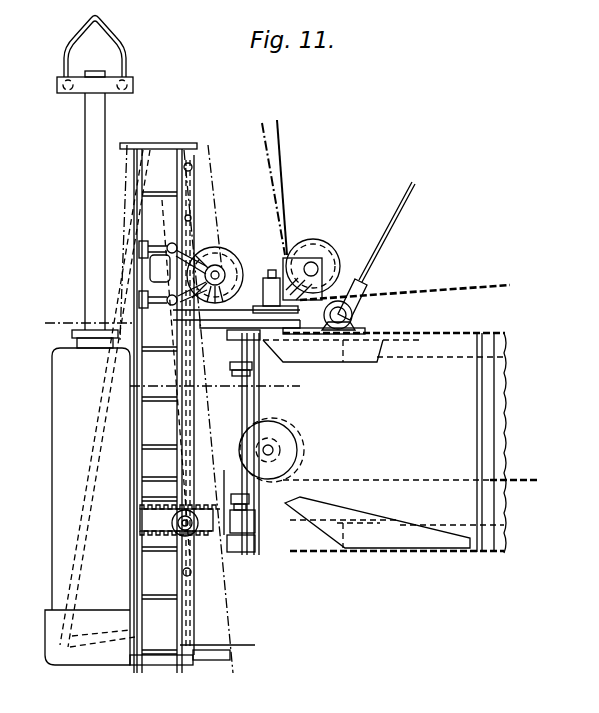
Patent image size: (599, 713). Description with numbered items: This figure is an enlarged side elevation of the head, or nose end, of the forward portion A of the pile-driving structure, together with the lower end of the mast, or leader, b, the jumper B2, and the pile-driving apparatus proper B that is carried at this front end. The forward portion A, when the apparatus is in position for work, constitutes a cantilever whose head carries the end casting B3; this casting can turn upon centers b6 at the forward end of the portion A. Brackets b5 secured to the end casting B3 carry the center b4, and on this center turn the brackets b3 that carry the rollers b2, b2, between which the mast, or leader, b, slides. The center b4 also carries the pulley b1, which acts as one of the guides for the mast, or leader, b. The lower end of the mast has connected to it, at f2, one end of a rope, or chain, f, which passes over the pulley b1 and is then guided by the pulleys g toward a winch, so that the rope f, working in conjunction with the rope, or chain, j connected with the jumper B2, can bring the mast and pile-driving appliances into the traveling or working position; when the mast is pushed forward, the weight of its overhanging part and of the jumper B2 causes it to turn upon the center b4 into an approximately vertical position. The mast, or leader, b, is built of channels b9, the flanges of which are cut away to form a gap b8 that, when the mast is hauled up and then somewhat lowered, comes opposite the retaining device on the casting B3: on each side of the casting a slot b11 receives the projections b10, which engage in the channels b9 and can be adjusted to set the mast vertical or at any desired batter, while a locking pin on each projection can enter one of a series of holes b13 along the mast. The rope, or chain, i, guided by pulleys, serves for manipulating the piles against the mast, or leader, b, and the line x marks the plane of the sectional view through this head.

The forward portion A is at (406, 443).
The pile-driving apparatus proper B is at (176, 396).
The jumper B2 is at (97, 341).
The end casting B3 is at (262, 563).
The mast or leader b is at (148, 421).
The pulley b1 is at (225, 250).
The rollers b2 is at (180, 245).
The brackets b3 is at (188, 253).
The center b4 is at (220, 273).
The brackets b5 is at (227, 290).
The centers b6 is at (263, 340).
The gap b8 is at (180, 622).
The channels b9 is at (190, 557).
The projections b10 is at (177, 530).
The slot b11 is at (140, 512).
The holes b13 is at (192, 216).
The rope or chain f is at (378, 478).
The connection point f2 is at (224, 648).
The pulleys g is at (295, 432).
The rope or chain i is at (262, 135).
The rope or chain j is at (283, 137).
The section line x is at (172, 353).